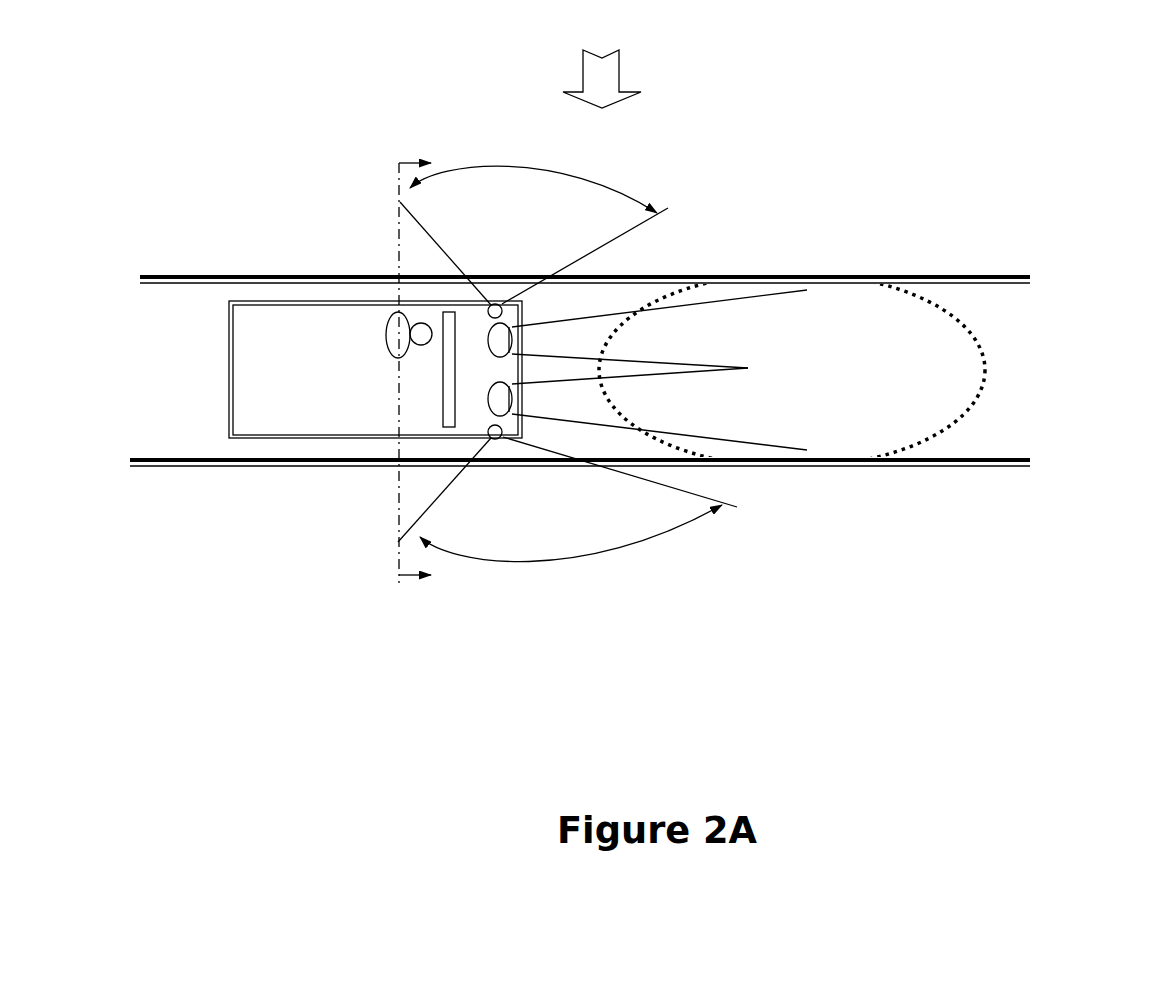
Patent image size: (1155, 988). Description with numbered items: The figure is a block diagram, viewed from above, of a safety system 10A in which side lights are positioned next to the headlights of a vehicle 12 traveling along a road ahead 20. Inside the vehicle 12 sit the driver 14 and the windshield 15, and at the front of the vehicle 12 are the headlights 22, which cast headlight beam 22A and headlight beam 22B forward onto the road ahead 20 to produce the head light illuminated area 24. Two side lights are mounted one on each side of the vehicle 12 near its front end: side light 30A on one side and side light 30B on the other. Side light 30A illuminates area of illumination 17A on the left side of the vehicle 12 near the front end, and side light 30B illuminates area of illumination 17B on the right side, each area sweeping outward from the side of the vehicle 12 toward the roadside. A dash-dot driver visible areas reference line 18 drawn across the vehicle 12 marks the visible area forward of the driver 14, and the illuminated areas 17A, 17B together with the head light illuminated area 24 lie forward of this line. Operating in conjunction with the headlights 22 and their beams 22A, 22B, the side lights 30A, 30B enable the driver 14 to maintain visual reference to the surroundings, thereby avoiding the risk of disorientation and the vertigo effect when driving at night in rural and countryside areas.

The safety system 10A is at (638, 65).
The vehicle 12 is at (375, 369).
The driver 14 is at (385, 322).
The windshield 15 is at (440, 372).
The area of illumination 17A is at (534, 235).
The area of illumination 17B is at (567, 499).
The driver visible areas reference line 18 is at (395, 500).
The road ahead 20 is at (612, 371).
The headlights 22 is at (505, 400).
The headlight beam 22A is at (659, 329).
The headlight beam 22B is at (659, 409).
The head light illuminated area 24 is at (792, 370).
The side light 30A is at (500, 297).
The side light 30B is at (498, 446).